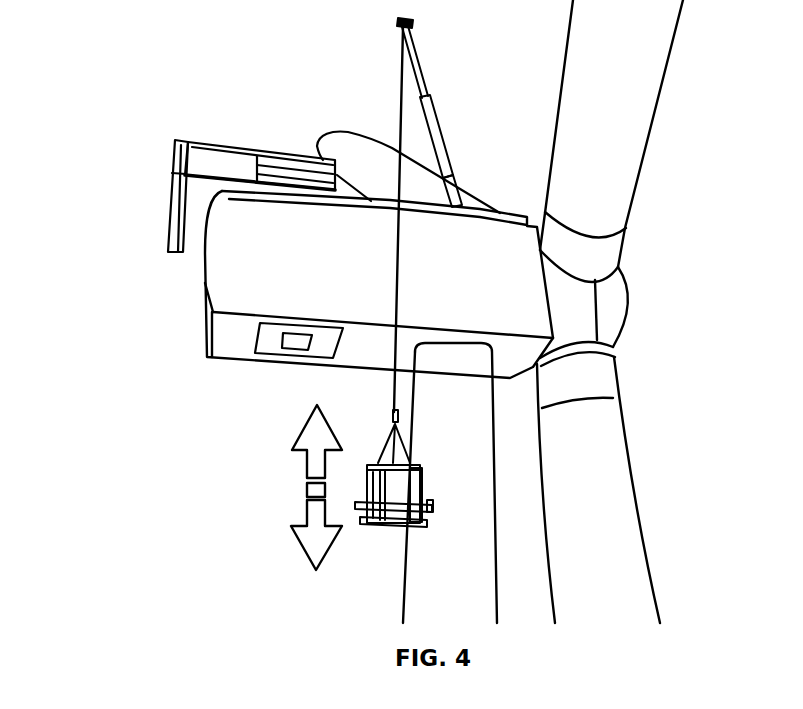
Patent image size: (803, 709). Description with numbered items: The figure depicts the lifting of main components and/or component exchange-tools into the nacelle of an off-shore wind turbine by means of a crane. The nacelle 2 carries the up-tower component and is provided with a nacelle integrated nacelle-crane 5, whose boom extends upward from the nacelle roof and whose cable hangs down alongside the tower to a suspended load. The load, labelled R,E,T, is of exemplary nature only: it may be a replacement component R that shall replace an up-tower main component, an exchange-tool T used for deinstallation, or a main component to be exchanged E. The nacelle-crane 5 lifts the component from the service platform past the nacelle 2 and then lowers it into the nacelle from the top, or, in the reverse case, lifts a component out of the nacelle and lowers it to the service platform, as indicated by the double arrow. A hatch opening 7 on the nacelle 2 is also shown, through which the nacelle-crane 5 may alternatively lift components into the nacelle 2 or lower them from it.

The nacelle 2 is at (235, 265).
The nacelle-crane 5 is at (438, 107).
The hatch opening 7 is at (270, 345).
The replacement component, main component to be exchanged, exchange-tool R,E,T is at (403, 527).